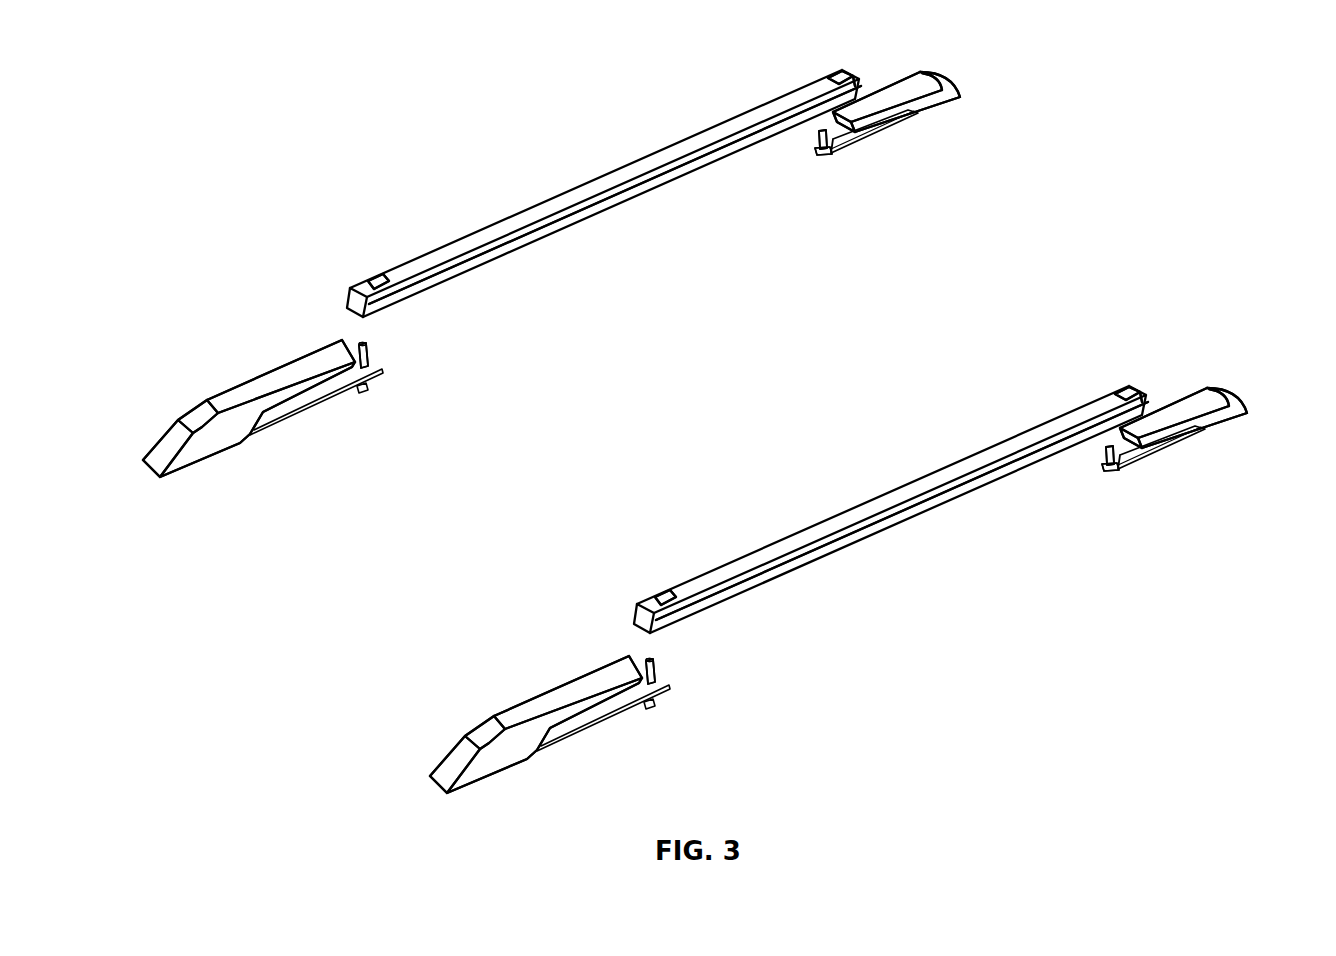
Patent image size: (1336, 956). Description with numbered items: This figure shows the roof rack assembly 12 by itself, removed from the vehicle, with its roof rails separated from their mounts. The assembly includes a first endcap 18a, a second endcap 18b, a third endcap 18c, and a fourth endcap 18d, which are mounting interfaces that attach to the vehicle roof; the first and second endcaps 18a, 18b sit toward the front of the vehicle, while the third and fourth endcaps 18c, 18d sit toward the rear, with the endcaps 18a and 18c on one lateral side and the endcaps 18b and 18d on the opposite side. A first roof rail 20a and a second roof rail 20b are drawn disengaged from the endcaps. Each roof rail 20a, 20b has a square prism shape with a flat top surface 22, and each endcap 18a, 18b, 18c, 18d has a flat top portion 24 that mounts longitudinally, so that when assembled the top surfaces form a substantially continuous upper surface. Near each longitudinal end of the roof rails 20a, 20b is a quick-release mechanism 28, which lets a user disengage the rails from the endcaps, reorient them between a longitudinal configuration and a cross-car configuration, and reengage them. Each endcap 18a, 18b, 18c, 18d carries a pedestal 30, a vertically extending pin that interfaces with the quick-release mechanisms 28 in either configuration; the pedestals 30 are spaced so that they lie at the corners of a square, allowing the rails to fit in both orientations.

The roof rack assembly 12 is at (316, 144).
The first endcap 18a is at (172, 476).
The second endcap 18b is at (530, 741).
The third endcap 18c is at (938, 100).
The fourth endcap 18d is at (1202, 429).
The first roof rail 20a is at (700, 130).
The second roof rail 20b is at (891, 509).
The flat top surface 22 is at (615, 175).
The flat top portion 24 is at (255, 385).
The quick-release mechanism 28 is at (378, 283).
The pedestal 30 is at (372, 357).